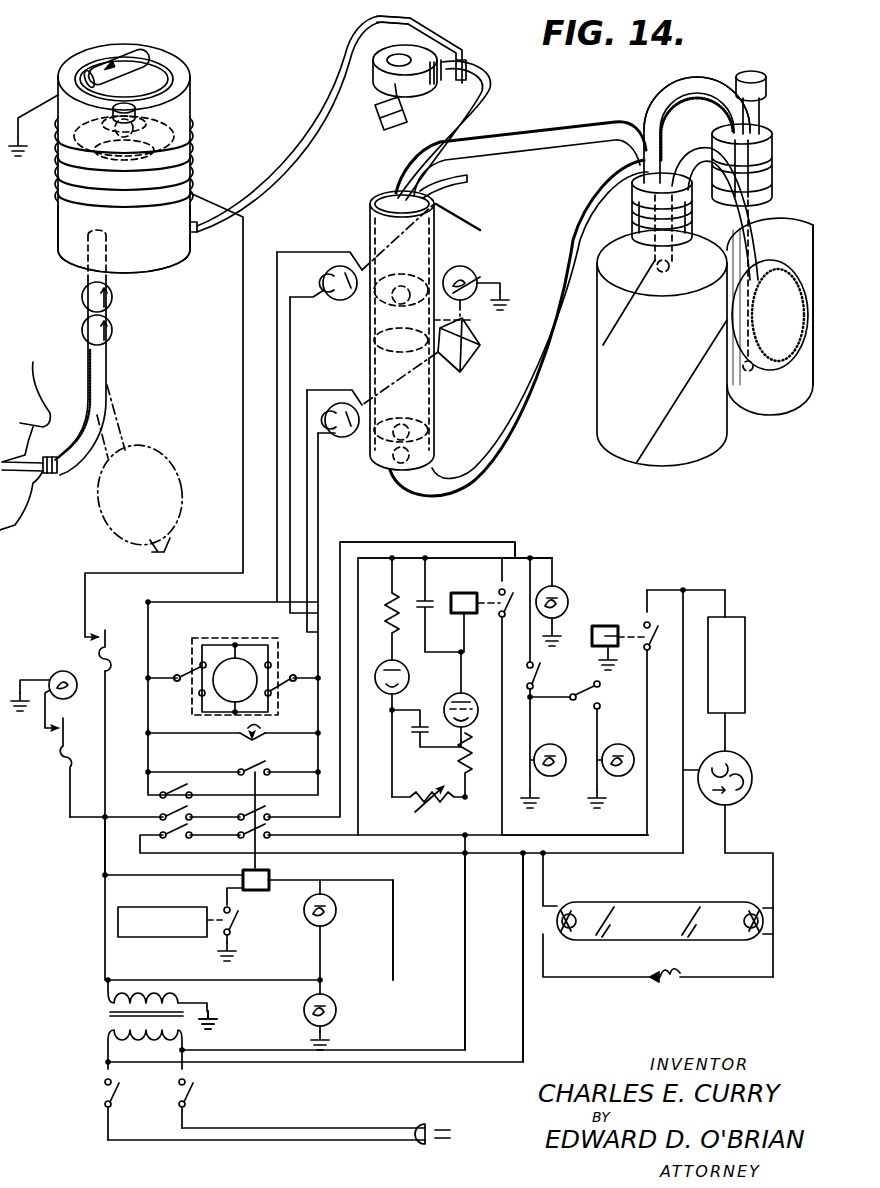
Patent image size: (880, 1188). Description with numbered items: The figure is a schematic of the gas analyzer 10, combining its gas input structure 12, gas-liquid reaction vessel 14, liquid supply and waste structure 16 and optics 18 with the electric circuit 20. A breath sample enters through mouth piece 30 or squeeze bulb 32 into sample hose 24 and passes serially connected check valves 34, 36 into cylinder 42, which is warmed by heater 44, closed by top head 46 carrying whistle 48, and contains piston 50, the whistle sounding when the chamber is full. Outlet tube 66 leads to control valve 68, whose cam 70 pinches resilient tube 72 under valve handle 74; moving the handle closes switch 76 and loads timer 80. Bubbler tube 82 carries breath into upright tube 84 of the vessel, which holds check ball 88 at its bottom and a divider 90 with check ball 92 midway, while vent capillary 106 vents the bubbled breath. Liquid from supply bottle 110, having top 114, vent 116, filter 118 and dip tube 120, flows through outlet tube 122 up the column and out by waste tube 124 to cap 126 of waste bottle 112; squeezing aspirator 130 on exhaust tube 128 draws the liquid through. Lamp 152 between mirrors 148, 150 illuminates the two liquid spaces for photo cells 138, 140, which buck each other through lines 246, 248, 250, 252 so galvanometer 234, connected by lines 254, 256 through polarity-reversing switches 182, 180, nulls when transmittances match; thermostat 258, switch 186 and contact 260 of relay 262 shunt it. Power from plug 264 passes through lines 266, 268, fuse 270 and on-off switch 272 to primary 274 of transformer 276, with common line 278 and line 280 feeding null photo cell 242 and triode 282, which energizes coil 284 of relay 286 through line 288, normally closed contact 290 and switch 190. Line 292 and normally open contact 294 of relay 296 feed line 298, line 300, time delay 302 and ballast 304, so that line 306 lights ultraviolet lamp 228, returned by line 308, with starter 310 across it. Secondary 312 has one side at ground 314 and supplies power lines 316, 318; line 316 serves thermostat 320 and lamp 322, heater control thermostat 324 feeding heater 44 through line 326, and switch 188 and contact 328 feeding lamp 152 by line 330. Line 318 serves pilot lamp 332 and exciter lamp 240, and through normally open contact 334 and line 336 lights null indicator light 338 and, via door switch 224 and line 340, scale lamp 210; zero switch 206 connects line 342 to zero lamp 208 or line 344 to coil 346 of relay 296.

The gas analyzer 10 is at (714, 70).
The gas input structure 12 is at (195, 58).
The gas-liquid reaction vessel 14 is at (361, 212).
The liquid supply and waste structure 16 is at (741, 441).
The optics 18 is at (490, 209).
The electric circuit 20 is at (580, 560).
The sample hose 24 is at (97, 385).
The mouth piece 30 is at (46, 476).
The squeeze bulb 32 is at (157, 488).
The check valve 34 is at (114, 329).
The check valve 36 is at (114, 295).
The cylinder 42 is at (68, 225).
The heater 44 is at (193, 133).
The top head 46 is at (172, 62).
The whistle 48 is at (140, 48).
The piston 50 is at (163, 127).
The outlet tube 66 is at (333, 91).
The control valve 68 is at (371, 87).
The cam 70 is at (413, 86).
The resilient tube 72 is at (443, 53).
The valve handle 74 is at (380, 133).
The switch 76 is at (236, 915).
The timer 80 is at (178, 933).
The bubbler tube 82 is at (493, 88).
The upright tube 84 is at (430, 396).
The check ball 88 is at (410, 434).
The divider 90 is at (470, 321).
The check ball 92 is at (398, 280).
The vent capillary 106 is at (468, 185).
The liquid supply bottle 110 is at (768, 405).
The waste bottle 112 is at (627, 447).
The top 114 is at (762, 132).
The vent 116 is at (757, 113).
The filter 118 is at (752, 72).
The dip tube 120 is at (742, 345).
The outlet tube 122 is at (648, 93).
The waste tube 124 is at (526, 142).
The cap 126 is at (648, 210).
The exhaust tube 128 is at (702, 146).
The aspirator 130 is at (760, 313).
The photo cell 138 is at (319, 276).
The photo cell 140 is at (346, 438).
The mirror 148 is at (483, 222).
The mirror 150 is at (462, 374).
The lamp 152 is at (470, 266).
The switch 180 is at (285, 690).
The switch 182 is at (195, 686).
The switch 186 is at (186, 791).
The switch 188 is at (185, 814).
The switch 190 is at (186, 835).
The zero switch 206 is at (601, 707).
The zero lamp 208 is at (620, 777).
The scale lamp 210 is at (553, 777).
The door switch 224 is at (538, 680).
The lamp 228 is at (654, 902).
The galvanometer 234 is at (243, 660).
The exciter lamp 240 is at (313, 921).
The photo cell 242 is at (410, 677).
The line 246 is at (148, 634).
The line 248 is at (320, 508).
The line 250 is at (279, 318).
The line 252 is at (292, 345).
The line 254 is at (167, 670).
The line 256 is at (294, 674).
The thermostat 258 is at (258, 733).
The contact 260 is at (263, 770).
The relay 262 is at (274, 878).
The plug 264 is at (440, 1124).
The line 266 is at (205, 1140).
The line 268 is at (240, 1128).
The fuse 270 is at (103, 1093).
The manual on-off switch 272 is at (190, 1093).
The primary 274 is at (110, 1029).
The transformer 276 is at (104, 1011).
The common line 278 is at (525, 1016).
The line 280 is at (465, 1028).
The triode 282 is at (464, 692).
The coil 284 is at (446, 600).
The relay 286 is at (472, 590).
The line 288 is at (368, 562).
The contact 290 is at (266, 835).
The line 292 is at (550, 838).
The contact 294 is at (664, 712).
The relay 296 is at (624, 620).
The line 298 is at (712, 590).
The line 300 is at (684, 733).
The time delay 302 is at (746, 758).
The ballast 304 is at (740, 652).
The line 306 is at (730, 850).
The line 308 is at (548, 877).
The starter 310 is at (690, 978).
The secondary 312 is at (184, 1002).
The ground 314 is at (212, 1012).
The power line 316 is at (105, 855).
The power line 318 is at (394, 955).
The thermostat 320 is at (60, 762).
The lamp 322 is at (53, 673).
The heater control thermostat 324 is at (100, 652).
The line 326 is at (170, 556).
The contact 328 is at (268, 814).
The line 330 is at (410, 542).
The pilot lamp 332 is at (337, 1007).
The contact 334 is at (505, 612).
The line 336 is at (522, 556).
The null indicator light 338 is at (569, 590).
The line 340 is at (534, 712).
The line 342 is at (599, 722).
The line 344 is at (600, 687).
The coil 346 is at (605, 625).